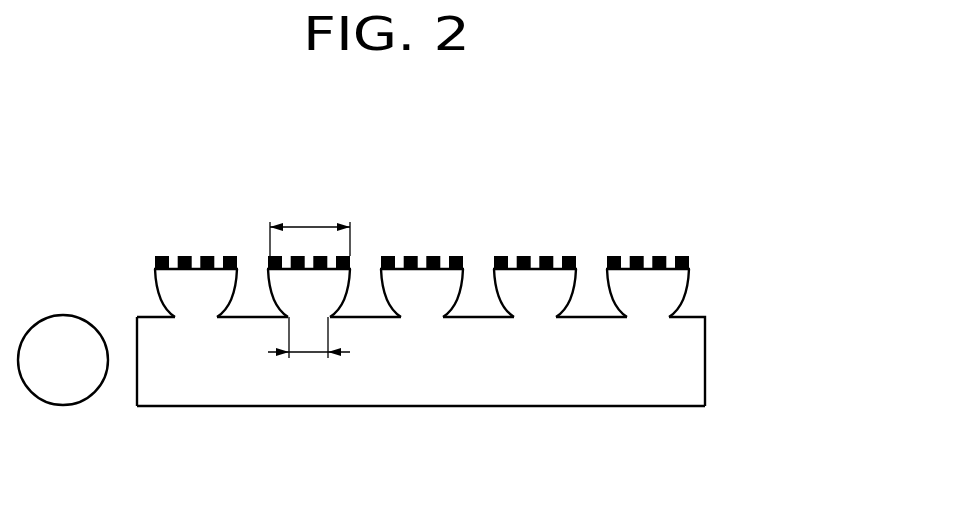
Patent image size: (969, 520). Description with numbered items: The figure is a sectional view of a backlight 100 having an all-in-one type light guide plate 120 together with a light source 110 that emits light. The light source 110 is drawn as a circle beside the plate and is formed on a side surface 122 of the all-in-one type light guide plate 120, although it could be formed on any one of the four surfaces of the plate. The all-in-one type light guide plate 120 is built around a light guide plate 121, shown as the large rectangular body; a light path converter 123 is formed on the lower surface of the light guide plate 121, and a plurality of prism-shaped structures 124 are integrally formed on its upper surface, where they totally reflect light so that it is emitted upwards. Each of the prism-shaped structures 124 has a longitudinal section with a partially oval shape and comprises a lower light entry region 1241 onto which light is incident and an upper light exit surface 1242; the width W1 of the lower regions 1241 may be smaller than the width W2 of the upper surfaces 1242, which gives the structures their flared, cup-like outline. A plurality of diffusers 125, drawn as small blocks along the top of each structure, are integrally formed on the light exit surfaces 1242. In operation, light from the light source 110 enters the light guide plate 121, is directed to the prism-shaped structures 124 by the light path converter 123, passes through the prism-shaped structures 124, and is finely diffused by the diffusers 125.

The backlight 100 is at (110, 200).
The light source 110 is at (61, 405).
The all-in-one type light guide plate 120 is at (785, 281).
The light guide plate 121 is at (695, 362).
The side surface 122 is at (137, 385).
The light path converter 123 is at (677, 407).
The prism-shaped structures 124 is at (464, 281).
The lower light entry regions 1241 is at (650, 318).
The upper light exit surfaces 1242 is at (650, 272).
The diffusers 125 is at (204, 257).